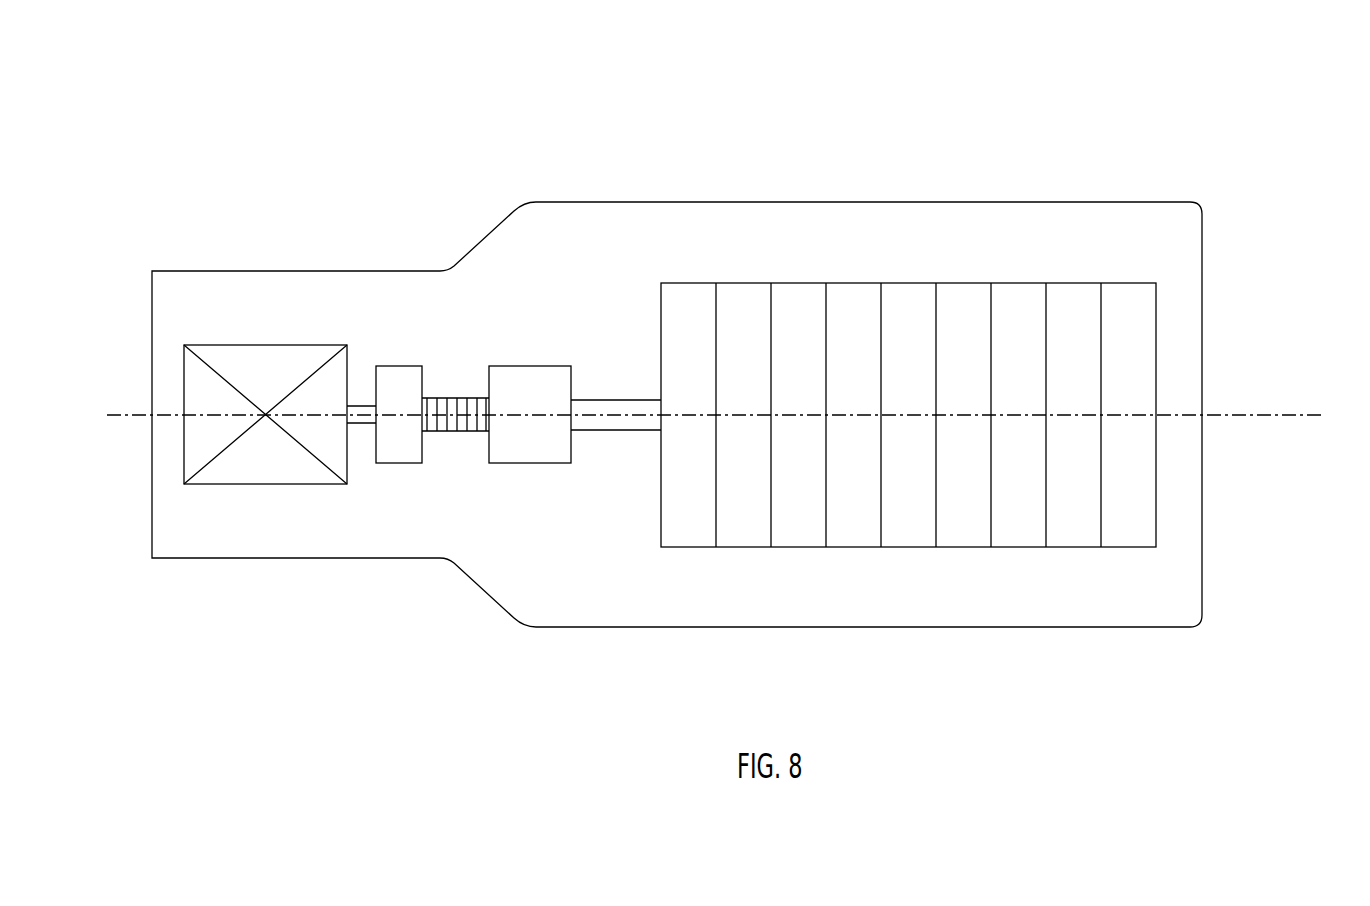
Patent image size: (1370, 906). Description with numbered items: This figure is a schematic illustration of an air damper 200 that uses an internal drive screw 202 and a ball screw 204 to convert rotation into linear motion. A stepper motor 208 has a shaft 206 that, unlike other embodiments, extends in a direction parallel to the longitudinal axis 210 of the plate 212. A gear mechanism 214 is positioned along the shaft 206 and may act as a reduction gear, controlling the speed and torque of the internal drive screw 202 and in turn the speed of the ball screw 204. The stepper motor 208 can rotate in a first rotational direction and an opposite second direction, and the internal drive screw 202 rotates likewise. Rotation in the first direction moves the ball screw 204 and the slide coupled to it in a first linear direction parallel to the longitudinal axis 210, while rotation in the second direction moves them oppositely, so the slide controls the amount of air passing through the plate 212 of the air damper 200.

The air damper 200 is at (1048, 118).
The internal drive screw 202 is at (461, 432).
The ball screw 204 is at (528, 366).
The shaft 206 is at (358, 424).
The stepper motor 208 is at (253, 345).
The longitudinal axis 210 is at (1250, 415).
The plate 212 is at (873, 608).
The gear mechanism 214 is at (399, 366).